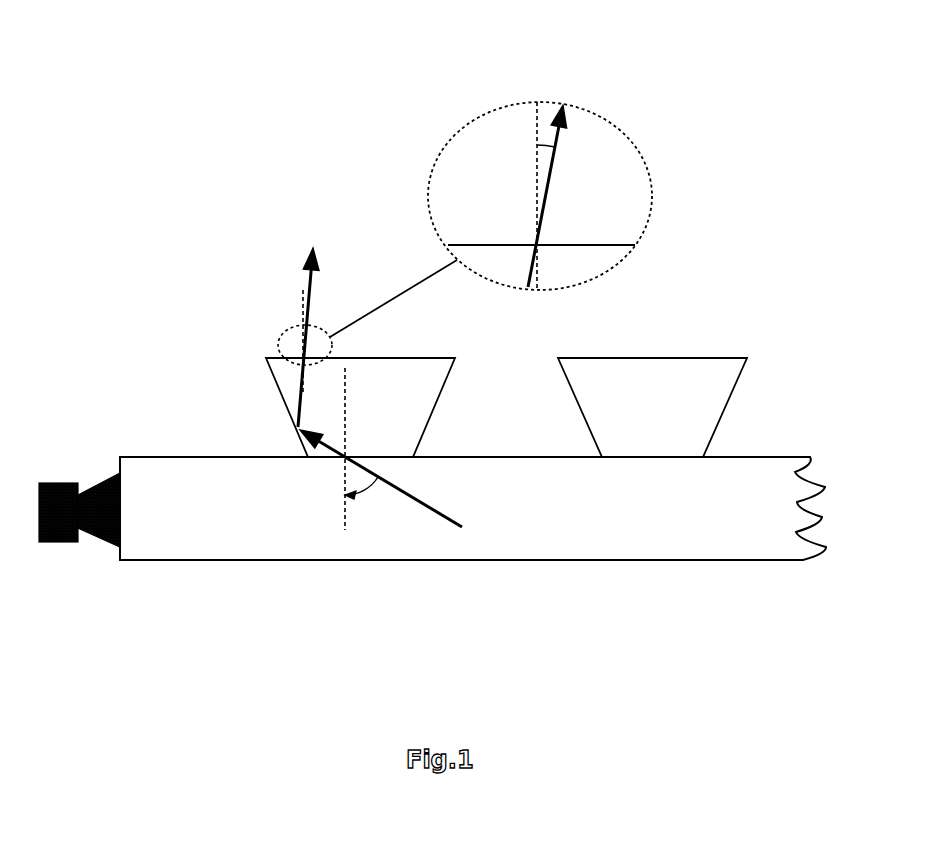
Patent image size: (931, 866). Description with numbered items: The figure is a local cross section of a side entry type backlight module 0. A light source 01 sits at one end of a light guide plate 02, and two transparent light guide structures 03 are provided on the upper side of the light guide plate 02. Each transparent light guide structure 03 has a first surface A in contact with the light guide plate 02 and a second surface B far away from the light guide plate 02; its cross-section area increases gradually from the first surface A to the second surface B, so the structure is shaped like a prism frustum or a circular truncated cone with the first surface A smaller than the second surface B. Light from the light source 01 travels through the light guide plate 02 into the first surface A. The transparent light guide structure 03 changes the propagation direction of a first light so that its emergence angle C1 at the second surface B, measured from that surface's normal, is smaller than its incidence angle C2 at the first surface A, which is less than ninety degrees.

The backlight module 0 is at (234, 64).
The light source 01 is at (62, 550).
The light guide plate 02 is at (237, 547).
The transparent light guide structure 03 is at (617, 417).
The first surface A is at (681, 449).
The second surface B is at (668, 352).
The emergence angle C1 is at (545, 134).
The incidence angle C2 is at (366, 449).